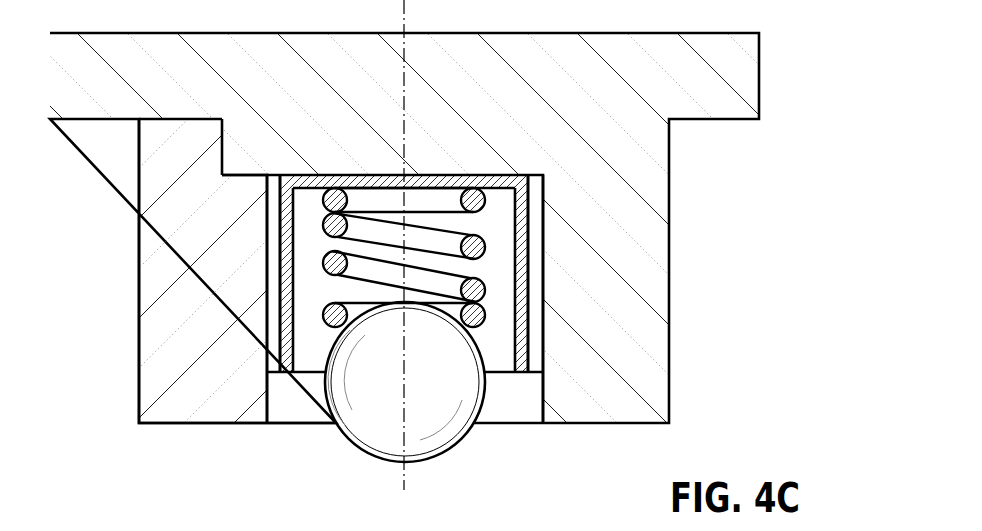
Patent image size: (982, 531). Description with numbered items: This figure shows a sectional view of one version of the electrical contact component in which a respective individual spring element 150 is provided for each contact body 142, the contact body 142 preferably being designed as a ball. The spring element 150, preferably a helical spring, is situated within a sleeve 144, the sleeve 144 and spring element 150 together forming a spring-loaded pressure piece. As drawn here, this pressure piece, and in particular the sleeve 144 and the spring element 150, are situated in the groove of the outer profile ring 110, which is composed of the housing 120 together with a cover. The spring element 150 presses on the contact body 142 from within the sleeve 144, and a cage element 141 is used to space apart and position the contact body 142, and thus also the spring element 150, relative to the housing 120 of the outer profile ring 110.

The outer profile ring 110 is at (733, 80).
The housing 120 is at (173, 202).
The cage element 141 is at (297, 405).
The contact body 142 is at (430, 433).
The sleeve 144 is at (522, 362).
The spring element 150 is at (327, 262).